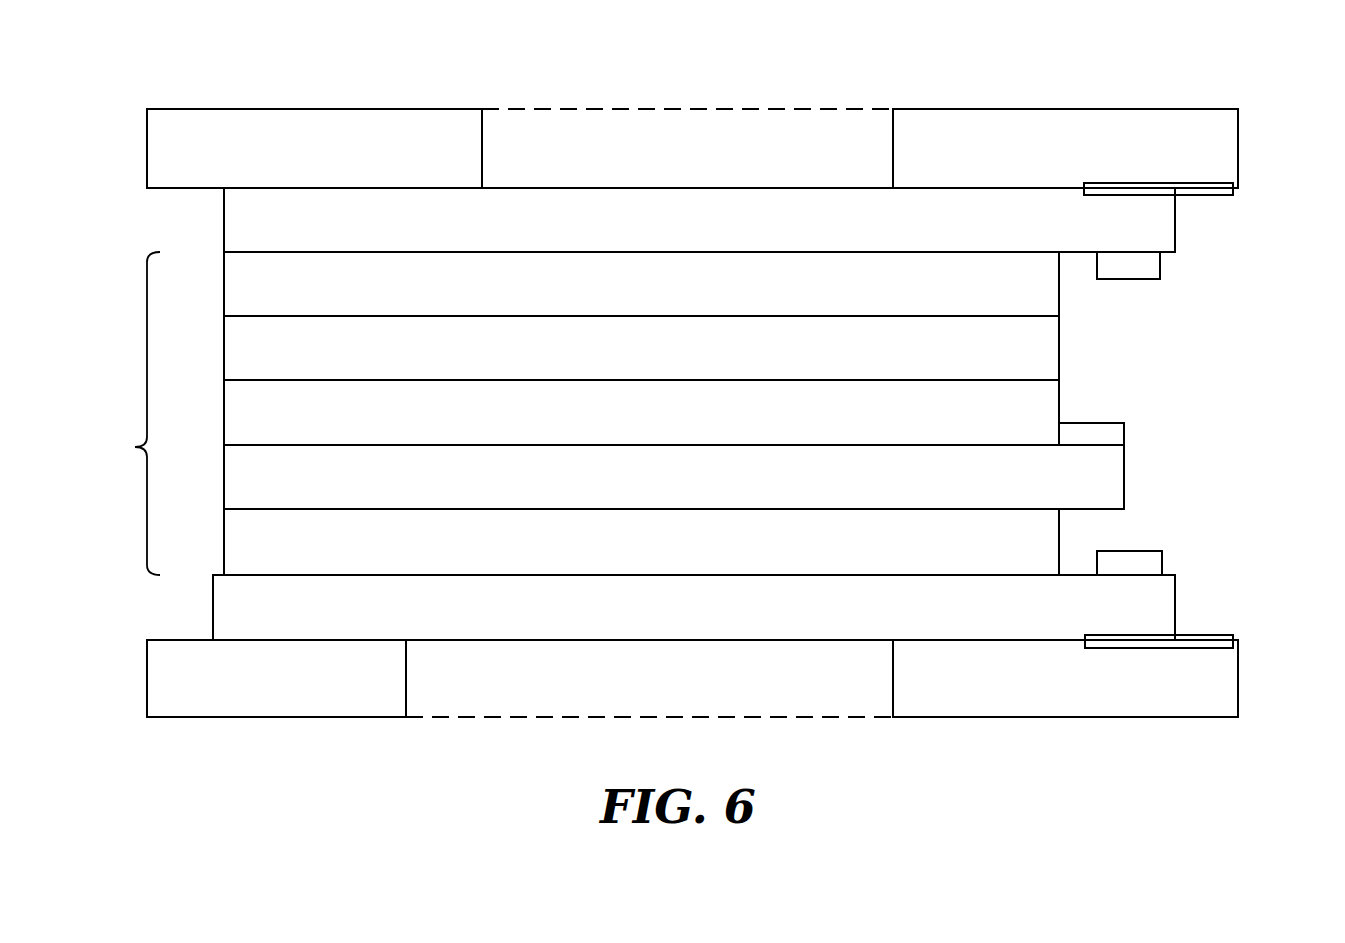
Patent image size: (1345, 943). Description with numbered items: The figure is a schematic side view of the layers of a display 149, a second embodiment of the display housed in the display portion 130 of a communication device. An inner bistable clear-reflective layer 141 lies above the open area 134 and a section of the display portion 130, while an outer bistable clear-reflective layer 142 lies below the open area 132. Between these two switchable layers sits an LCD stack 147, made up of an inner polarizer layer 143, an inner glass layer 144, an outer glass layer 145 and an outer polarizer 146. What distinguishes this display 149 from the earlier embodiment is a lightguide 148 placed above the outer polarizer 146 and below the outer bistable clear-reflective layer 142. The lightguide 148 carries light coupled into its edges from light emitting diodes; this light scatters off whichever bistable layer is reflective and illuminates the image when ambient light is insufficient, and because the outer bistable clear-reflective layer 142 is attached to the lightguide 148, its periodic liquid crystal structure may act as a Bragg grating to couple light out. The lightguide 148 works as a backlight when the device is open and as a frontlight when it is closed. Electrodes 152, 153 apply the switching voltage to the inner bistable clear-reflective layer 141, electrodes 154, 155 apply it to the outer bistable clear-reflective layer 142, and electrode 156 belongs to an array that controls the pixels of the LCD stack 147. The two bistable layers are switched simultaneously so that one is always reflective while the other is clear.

The display portion 130 is at (325, 112).
The open area 132 is at (513, 120).
The open area 134 is at (475, 702).
The inner bistable clear-reflective layer 141 is at (232, 608).
The outer bistable clear-reflective layer 142 is at (783, 203).
The inner polarizer layer 143 is at (232, 560).
The inner glass layer 144 is at (232, 495).
The outer glass layer 145 is at (230, 412).
The outer polarizer 146 is at (236, 355).
The LCD stack 147 is at (126, 413).
The lightguide 148 is at (236, 268).
The display 149 is at (903, 760).
The electrode 152 is at (1147, 553).
The electrode 153 is at (1195, 630).
The electrode 154 is at (1153, 272).
The electrode 155 is at (1207, 196).
The electrode 156 is at (1108, 427).